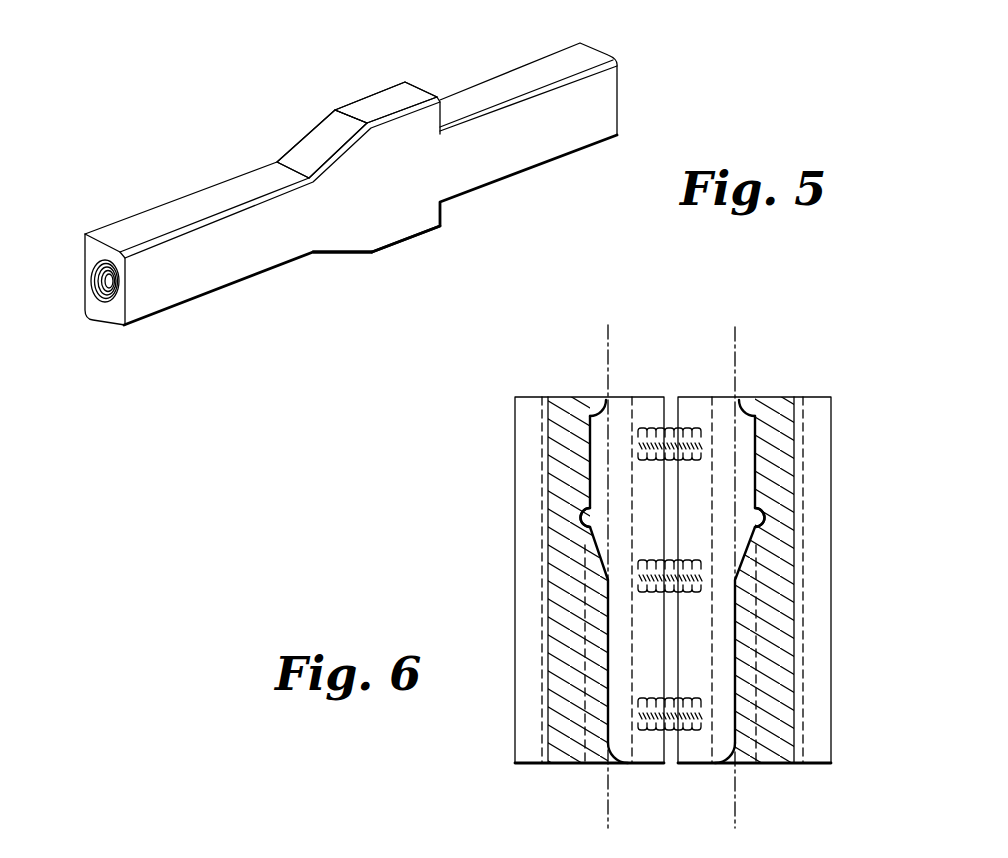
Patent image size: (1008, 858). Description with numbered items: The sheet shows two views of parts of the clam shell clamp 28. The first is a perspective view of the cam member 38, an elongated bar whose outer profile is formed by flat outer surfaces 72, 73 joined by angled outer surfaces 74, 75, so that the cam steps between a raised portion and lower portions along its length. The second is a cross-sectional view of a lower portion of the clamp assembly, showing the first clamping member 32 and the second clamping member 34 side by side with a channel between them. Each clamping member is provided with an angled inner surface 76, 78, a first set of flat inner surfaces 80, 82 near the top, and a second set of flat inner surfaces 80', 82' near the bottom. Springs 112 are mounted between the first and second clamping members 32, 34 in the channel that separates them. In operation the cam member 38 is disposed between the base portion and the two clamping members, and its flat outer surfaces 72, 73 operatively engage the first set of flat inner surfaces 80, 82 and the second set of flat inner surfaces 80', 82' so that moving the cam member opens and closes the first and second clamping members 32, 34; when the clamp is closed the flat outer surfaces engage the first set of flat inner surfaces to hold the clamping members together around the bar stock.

In FIG. 6, the clam shell clamp 28 is at (611, 588).
In FIG. 6, the first clamping member 32 is at (505, 477).
In FIG. 6, the second clamping member 34 is at (840, 467).
In FIG. 5, the cam member 38 is at (327, 268).
In FIG. 5, the flat outer surface 72 is at (385, 97).
In FIG. 5, the flat outer surface 73 is at (398, 246).
In FIG. 5, the angled outer surface 74 is at (318, 147).
In FIG. 5, the angled outer surface 75 is at (340, 254).
In FIG. 6, the angled inner surface 76 is at (595, 553).
In FIG. 6, the angled inner surface 78 is at (745, 558).
In FIG. 6, the flat inner surface of first set 80 is at (573, 359).
In FIG. 6, the flat inner surface of first set 82 is at (776, 359).
In FIG. 6, the flat inner surface of second set 80' is at (633, 800).
In FIG. 6, the flat inner surface of second set 82' is at (714, 800).
In FIG. 6, the spring 112 is at (674, 427).